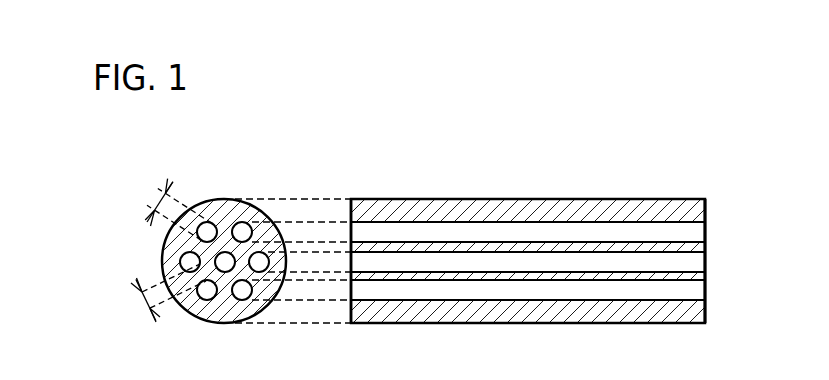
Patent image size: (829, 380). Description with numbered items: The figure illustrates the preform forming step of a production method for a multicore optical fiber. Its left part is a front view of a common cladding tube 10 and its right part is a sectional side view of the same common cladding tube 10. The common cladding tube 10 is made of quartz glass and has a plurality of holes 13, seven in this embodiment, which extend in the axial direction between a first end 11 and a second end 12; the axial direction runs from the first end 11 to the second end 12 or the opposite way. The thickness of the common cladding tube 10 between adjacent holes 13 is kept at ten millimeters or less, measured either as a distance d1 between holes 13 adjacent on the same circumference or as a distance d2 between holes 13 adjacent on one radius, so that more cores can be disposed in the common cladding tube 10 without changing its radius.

The common cladding tube 10 is at (231, 200).
The first end 11 is at (349, 199).
The second end 12 is at (707, 199).
The holes 13 is at (698, 231).
The distance between holes adjacent on the same circumference d1 is at (147, 300).
The distance between holes adjacent on one radius d2 is at (154, 204).